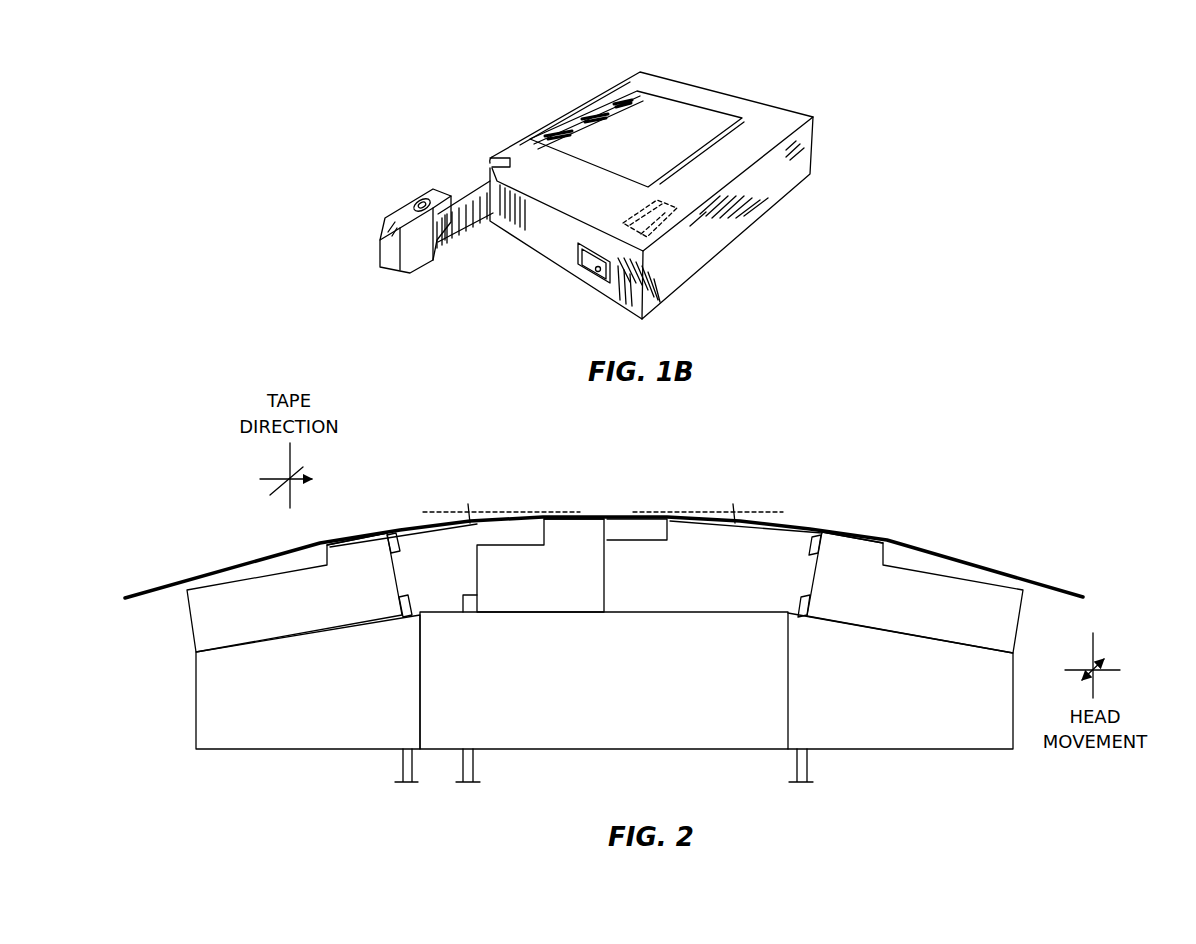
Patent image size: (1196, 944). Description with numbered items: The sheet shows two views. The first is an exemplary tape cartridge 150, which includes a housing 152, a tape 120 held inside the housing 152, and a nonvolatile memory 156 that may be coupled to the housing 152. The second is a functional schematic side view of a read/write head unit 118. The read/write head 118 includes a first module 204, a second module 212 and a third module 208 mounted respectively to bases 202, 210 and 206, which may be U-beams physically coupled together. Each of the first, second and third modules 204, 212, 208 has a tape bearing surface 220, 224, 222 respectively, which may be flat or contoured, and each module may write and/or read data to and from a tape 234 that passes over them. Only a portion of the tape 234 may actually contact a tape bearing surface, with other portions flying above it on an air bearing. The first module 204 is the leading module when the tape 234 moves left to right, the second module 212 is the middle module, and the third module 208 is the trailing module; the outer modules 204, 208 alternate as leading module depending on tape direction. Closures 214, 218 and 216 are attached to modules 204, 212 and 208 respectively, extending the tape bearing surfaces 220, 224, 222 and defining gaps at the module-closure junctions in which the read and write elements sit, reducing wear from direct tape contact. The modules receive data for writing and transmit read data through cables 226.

In FIG. 1B, the tape cartridge 150 is at (784, 92).
In FIG. 1B, the housing 152 is at (543, 120).
In FIG. 1B, the nonvolatile memory 156 is at (650, 213).
In FIG. 1B, the tape 120 is at (467, 233).
In FIG. 2, the read/write head unit 118 is at (893, 476).
In FIG. 2, the tape 234 is at (970, 557).
In FIG. 2, the base 202 is at (254, 739).
In FIG. 2, the first module 204 is at (236, 638).
In FIG. 2, the base 206 is at (999, 739).
In FIG. 2, the third module 208 is at (1009, 638).
In FIG. 2, the base 210 is at (769, 739).
In FIG. 2, the second module 212 is at (518, 608).
In FIG. 2, the closure 214 is at (398, 549).
In FIG. 2, the closure 216 is at (808, 549).
In FIG. 2, the closure 218 is at (645, 541).
In FIG. 2, the tape bearing surface 220 is at (373, 541).
In FIG. 2, the tape bearing surface 222 is at (840, 539).
In FIG. 2, the tape bearing surface 224 is at (582, 521).
In FIG. 2, the cables 226 is at (400, 762).